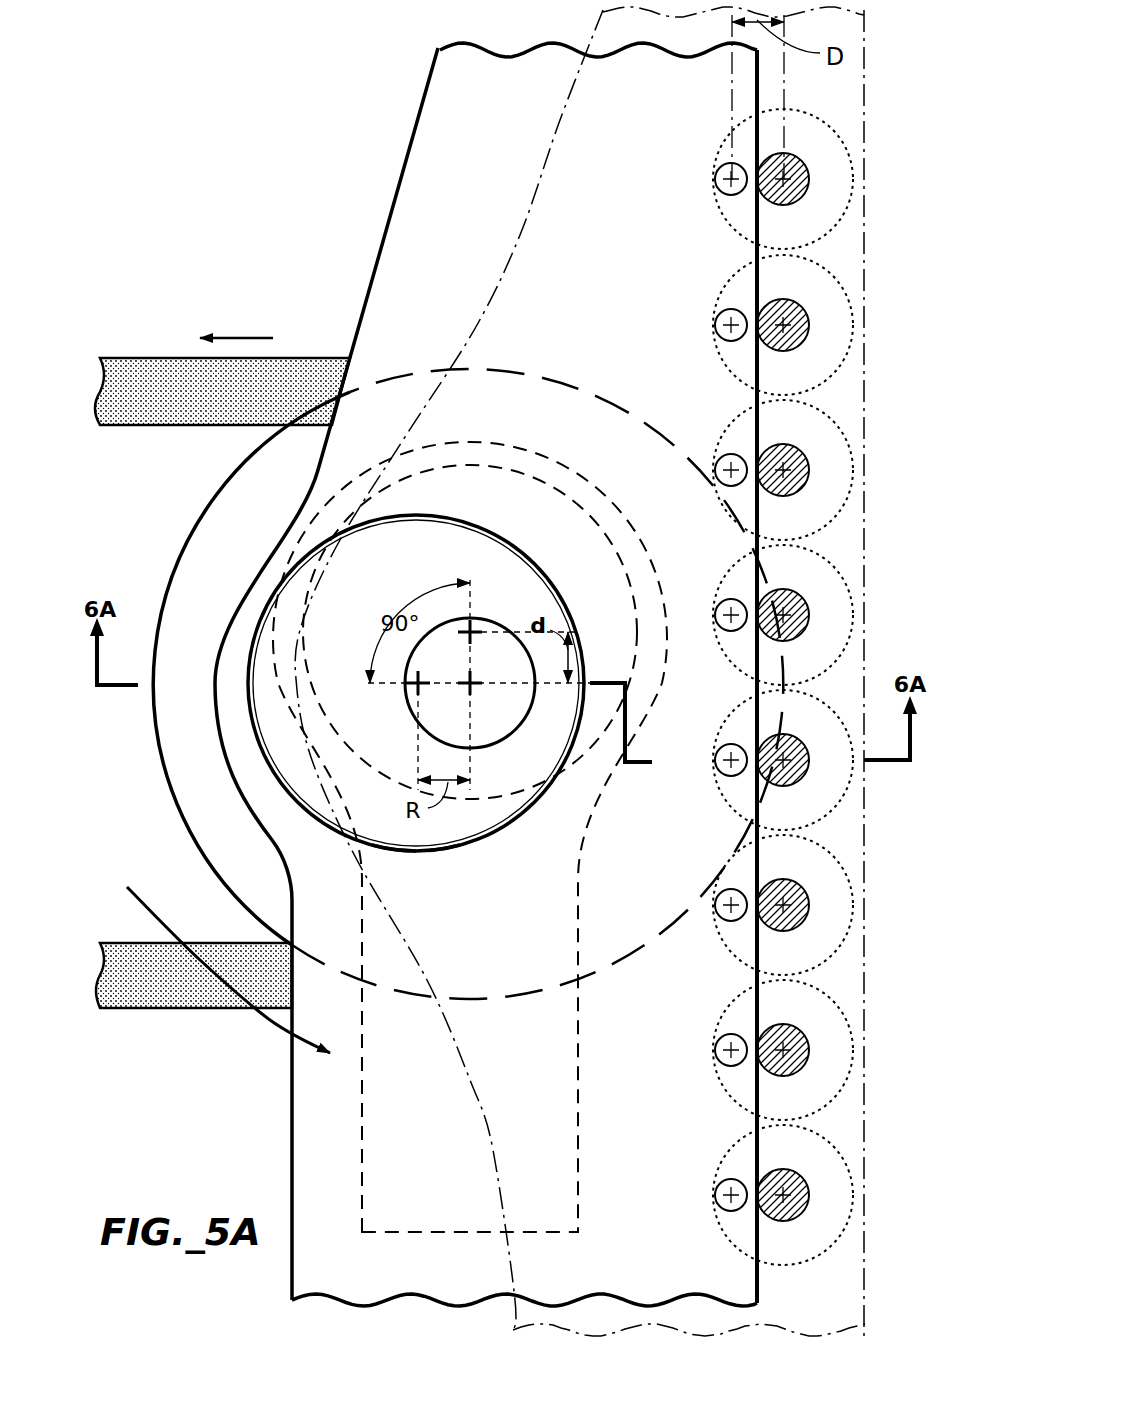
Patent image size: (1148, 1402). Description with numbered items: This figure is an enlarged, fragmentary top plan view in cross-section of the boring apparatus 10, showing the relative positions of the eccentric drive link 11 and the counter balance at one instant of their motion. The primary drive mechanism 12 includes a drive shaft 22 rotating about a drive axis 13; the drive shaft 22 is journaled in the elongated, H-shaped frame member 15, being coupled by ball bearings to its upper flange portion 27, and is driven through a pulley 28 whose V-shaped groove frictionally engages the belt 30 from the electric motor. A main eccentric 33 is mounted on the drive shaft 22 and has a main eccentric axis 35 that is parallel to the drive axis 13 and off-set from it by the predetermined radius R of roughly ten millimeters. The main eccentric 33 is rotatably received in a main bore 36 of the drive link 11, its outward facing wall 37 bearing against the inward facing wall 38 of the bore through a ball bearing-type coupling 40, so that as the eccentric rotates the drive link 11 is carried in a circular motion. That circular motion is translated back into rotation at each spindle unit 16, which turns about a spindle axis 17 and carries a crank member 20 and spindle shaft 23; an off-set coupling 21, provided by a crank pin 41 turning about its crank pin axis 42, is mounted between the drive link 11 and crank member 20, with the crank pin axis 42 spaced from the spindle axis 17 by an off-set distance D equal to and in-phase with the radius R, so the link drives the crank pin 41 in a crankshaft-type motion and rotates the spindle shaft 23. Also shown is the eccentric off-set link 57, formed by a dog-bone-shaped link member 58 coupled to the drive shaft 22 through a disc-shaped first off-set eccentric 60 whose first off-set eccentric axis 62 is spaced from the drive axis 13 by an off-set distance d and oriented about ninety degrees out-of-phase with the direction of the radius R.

The apparatus 10 is at (335, 268).
The eccentric drive link 11 is at (417, 120).
The primary drive mechanism 12 is at (148, 818).
The drive axis 13 is at (477, 690).
The frame member 15 is at (872, 163).
The spindle unit 16 is at (813, 610).
The spindle axis 17 is at (787, 177).
The crank member 20 is at (870, 193).
The off-set coupling 21 is at (733, 230).
The drive shaft 22 is at (507, 632).
The spindle shaft 23 is at (810, 457).
The upper flange portion 27 is at (467, 1078).
The pulley 28 is at (205, 515).
The belt 30 is at (168, 360).
The main eccentric 33 is at (416, 686).
The main eccentric axis 35 is at (415, 688).
The main bore 36 is at (490, 825).
The outward facing wall 37 is at (420, 847).
The inward facing wall 38 is at (398, 850).
The ball bearing-type coupling 40 is at (437, 518).
The crank pin 41 is at (728, 197).
The crank pin axis 42 is at (718, 170).
The eccentric off-set link 57 is at (322, 1087).
The link member 58 is at (362, 1150).
The first off-set eccentric 60 is at (590, 527).
The first off-set eccentric axis 62 is at (473, 633).